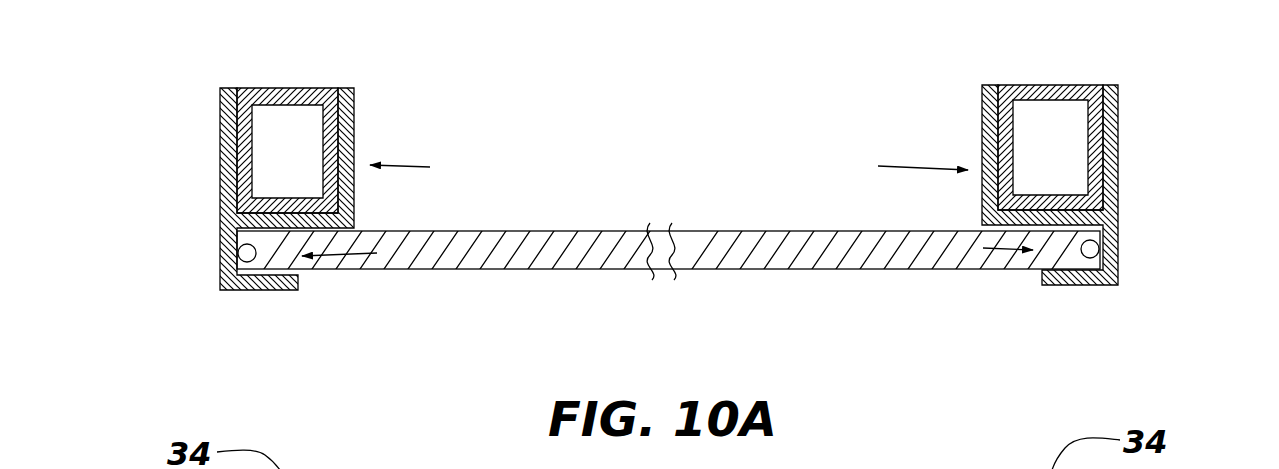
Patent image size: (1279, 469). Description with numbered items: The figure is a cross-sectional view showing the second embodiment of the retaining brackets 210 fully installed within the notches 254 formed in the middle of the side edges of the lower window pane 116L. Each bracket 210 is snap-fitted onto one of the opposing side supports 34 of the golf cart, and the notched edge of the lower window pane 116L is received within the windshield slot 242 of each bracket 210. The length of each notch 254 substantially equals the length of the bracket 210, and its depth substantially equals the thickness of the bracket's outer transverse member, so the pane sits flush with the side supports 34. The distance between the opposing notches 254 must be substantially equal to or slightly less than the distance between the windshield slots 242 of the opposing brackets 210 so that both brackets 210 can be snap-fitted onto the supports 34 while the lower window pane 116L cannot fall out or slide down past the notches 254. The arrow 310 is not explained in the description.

The side support 34 is at (285, 88).
The lower window pane 116L is at (573, 231).
The notch 254 is at (238, 248).
The windshield slot 242 is at (377, 253).
The direction arrow 310 is at (430, 167).
The bracket 210 is at (878, 166).